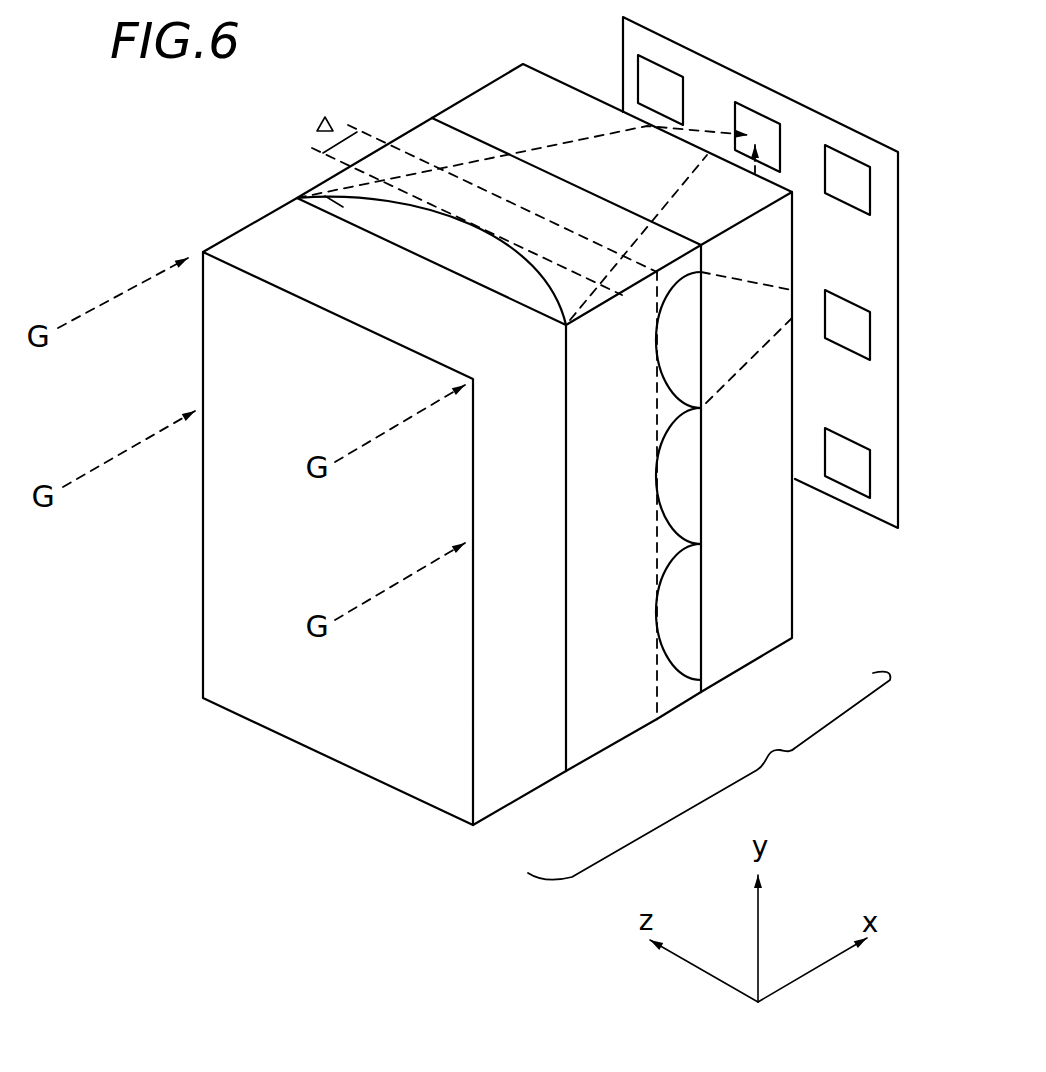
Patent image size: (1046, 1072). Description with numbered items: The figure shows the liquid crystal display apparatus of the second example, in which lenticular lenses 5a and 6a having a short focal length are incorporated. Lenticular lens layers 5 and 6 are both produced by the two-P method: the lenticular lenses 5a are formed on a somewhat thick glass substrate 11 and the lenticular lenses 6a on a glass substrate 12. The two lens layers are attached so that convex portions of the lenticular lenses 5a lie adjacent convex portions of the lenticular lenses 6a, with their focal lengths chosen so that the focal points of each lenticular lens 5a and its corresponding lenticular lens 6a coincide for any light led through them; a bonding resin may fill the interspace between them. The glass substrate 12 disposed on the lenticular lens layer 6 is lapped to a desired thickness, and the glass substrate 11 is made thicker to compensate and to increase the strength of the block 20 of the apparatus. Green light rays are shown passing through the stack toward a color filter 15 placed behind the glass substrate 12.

The glass substrate 11 is at (172, 600).
The lenticular lens layer 5 is at (623, 740).
The lenticular lens 5a is at (310, 195).
The lenticular lens layer 6 is at (680, 707).
The lenticular lens 6a is at (690, 613).
The glass substrate 12 is at (765, 568).
The color filter 15 is at (615, 35).
The block 20 is at (709, 776).